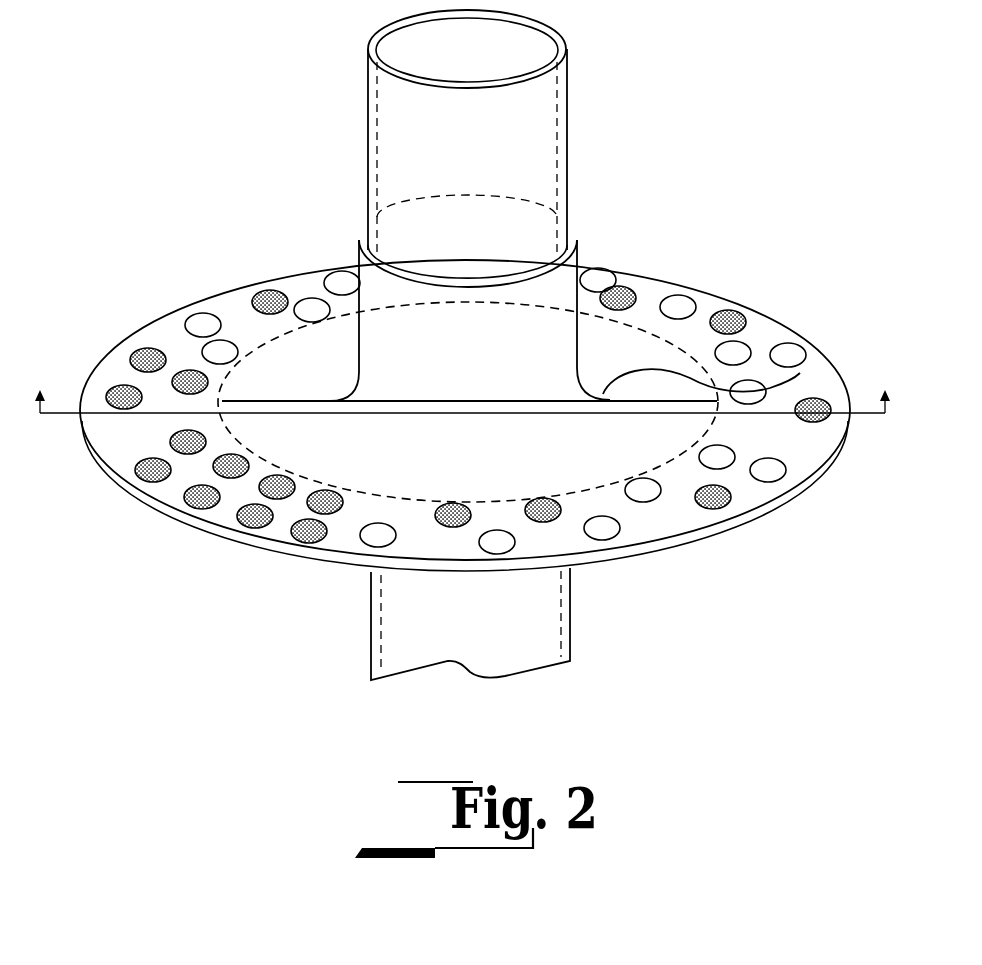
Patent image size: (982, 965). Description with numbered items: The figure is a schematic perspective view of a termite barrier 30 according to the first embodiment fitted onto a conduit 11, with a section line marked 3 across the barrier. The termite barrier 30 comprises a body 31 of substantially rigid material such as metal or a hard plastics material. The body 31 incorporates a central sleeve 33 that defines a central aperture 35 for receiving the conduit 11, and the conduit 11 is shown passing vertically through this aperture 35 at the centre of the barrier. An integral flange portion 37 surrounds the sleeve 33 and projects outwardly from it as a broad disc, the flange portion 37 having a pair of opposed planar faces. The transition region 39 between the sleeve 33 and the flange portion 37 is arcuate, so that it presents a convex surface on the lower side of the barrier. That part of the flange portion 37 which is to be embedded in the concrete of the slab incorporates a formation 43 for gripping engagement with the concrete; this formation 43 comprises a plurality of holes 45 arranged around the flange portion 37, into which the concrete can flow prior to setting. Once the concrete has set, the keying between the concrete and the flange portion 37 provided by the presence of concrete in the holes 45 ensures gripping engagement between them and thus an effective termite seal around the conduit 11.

The conduit 11 is at (567, 84).
The termite barrier 30 is at (468, 377).
The body 31 is at (660, 287).
The central sleeve 33 is at (565, 286).
The central aperture 35 is at (362, 240).
The flange portion 37 is at (755, 340).
The transition region 39 is at (783, 378).
The formation 43 is at (133, 345).
The holes 45 is at (653, 500).
The section line 3- 3 is at (462, 388).